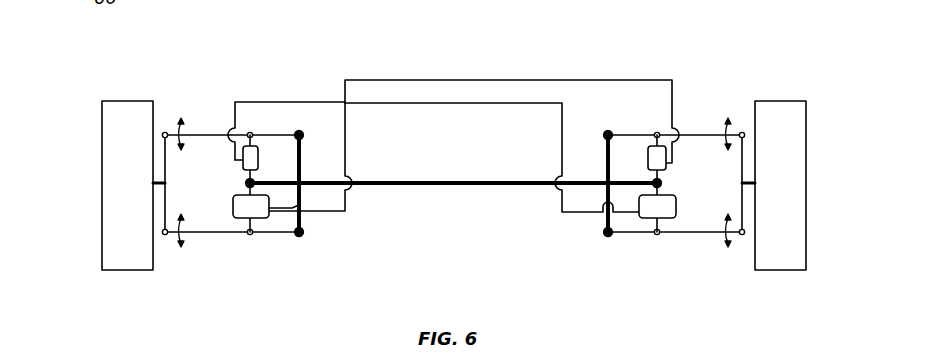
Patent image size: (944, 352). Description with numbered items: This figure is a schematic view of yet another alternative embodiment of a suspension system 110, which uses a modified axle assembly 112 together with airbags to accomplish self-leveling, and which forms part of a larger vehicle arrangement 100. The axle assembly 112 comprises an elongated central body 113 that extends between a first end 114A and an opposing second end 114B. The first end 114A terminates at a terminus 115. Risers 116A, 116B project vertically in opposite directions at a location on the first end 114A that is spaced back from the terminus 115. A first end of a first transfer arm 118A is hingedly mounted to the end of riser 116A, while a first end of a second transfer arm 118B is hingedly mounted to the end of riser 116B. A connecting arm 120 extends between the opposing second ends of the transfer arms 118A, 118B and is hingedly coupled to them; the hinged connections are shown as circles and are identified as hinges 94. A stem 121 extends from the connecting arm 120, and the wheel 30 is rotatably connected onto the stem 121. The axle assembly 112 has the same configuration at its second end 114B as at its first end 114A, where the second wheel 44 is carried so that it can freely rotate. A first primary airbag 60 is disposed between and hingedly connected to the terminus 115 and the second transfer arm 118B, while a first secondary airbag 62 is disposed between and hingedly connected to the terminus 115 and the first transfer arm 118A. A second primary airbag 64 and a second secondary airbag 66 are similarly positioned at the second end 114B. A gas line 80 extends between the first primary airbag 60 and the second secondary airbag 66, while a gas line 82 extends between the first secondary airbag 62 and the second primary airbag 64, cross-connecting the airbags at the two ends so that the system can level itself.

The wheel 30 is at (130, 270).
The second wheel 44 is at (782, 270).
The first primary airbag 60 is at (272, 218).
The first secondary airbag 62 is at (259, 150).
The second primary airbag 64 is at (677, 210).
The second secondary airbag 66 is at (667, 155).
The gas line 80 is at (445, 80).
The gas line 82 is at (482, 103).
The hinges 94 is at (174, 128).
The vehicle 100 is at (729, 348).
The suspension system 110 is at (674, 44).
The axle assembly 112 is at (426, 181).
The elongated central body 113 is at (372, 186).
The first end 114A is at (318, 259).
The second end 114B is at (617, 243).
The terminus 115 is at (301, 140).
The riser 116A is at (302, 170).
The riser 116B is at (300, 193).
The first transfer arm 118A is at (212, 133).
The second transfer arm 118B is at (207, 234).
The connecting arm 120 is at (170, 201).
The stem 121 is at (153, 173).